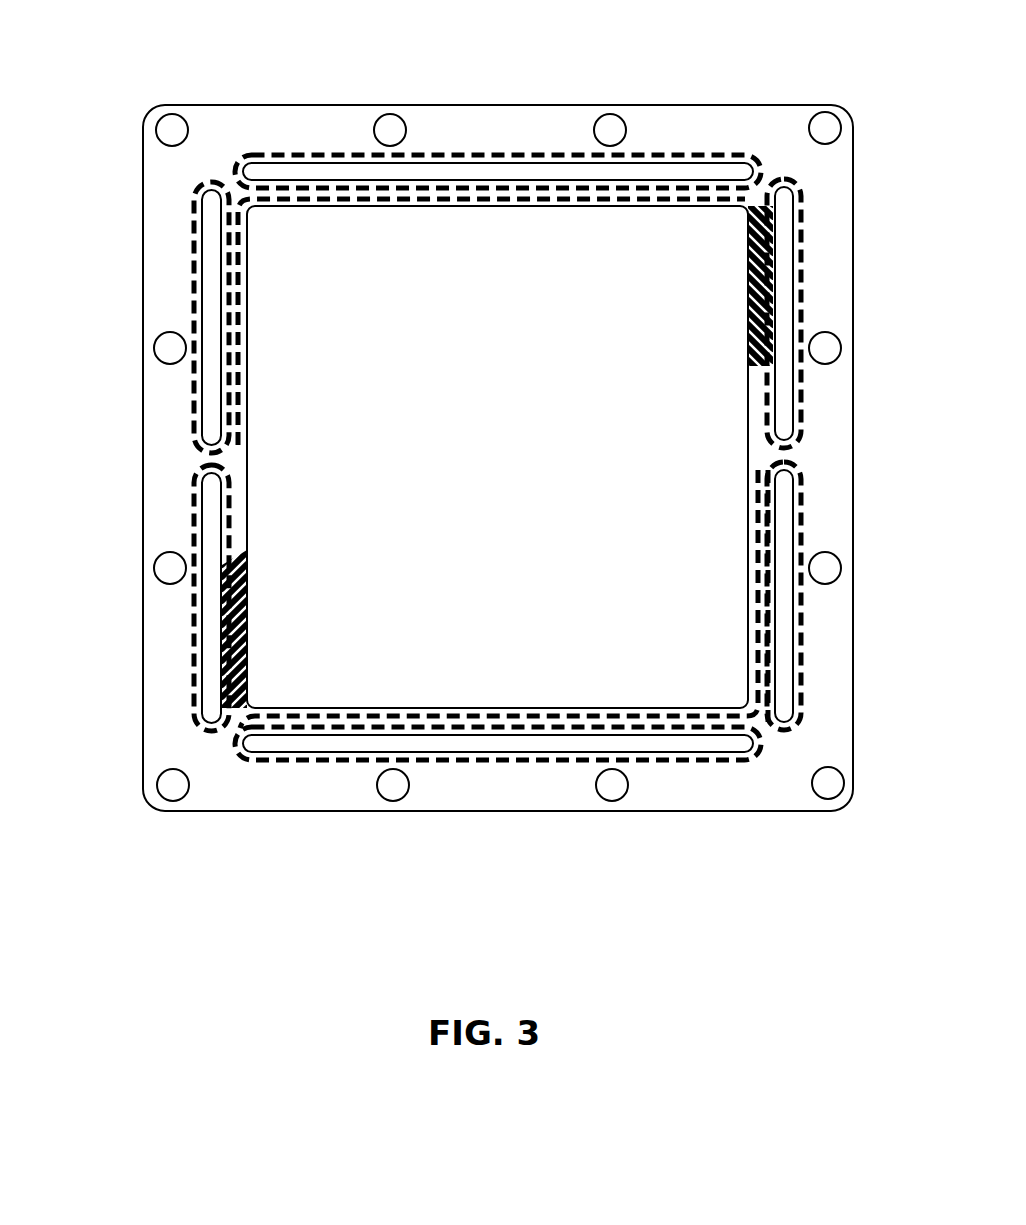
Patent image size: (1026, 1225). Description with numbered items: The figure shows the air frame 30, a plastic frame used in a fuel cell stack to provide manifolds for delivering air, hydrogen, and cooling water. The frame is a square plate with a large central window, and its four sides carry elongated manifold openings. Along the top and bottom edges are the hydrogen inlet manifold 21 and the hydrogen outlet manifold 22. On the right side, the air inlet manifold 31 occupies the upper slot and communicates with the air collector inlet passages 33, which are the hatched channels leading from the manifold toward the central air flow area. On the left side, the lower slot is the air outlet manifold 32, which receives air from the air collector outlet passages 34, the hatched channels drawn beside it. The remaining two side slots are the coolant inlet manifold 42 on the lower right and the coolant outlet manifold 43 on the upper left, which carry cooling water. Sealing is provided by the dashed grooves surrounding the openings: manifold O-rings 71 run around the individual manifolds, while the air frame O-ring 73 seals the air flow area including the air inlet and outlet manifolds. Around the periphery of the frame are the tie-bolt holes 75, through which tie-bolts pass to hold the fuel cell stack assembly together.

The air frame 30 is at (498, 409).
The tie-bolt holes 75 is at (220, 89).
The hydrogen inlet manifold 21 is at (510, 109).
The hydrogen outlet manifold 22 is at (498, 803).
The coolant outlet manifold 43 is at (135, 317).
The air outlet manifold 32 is at (135, 598).
The air inlet manifold 31 is at (861, 313).
The coolant inlet manifold 42 is at (861, 596).
The air collector inlet passages 33 is at (888, 232).
The air collector outlet passages 34 is at (105, 712).
The manifold O-rings 71 is at (497, 455).
The air frame O-ring 73 is at (142, 576).